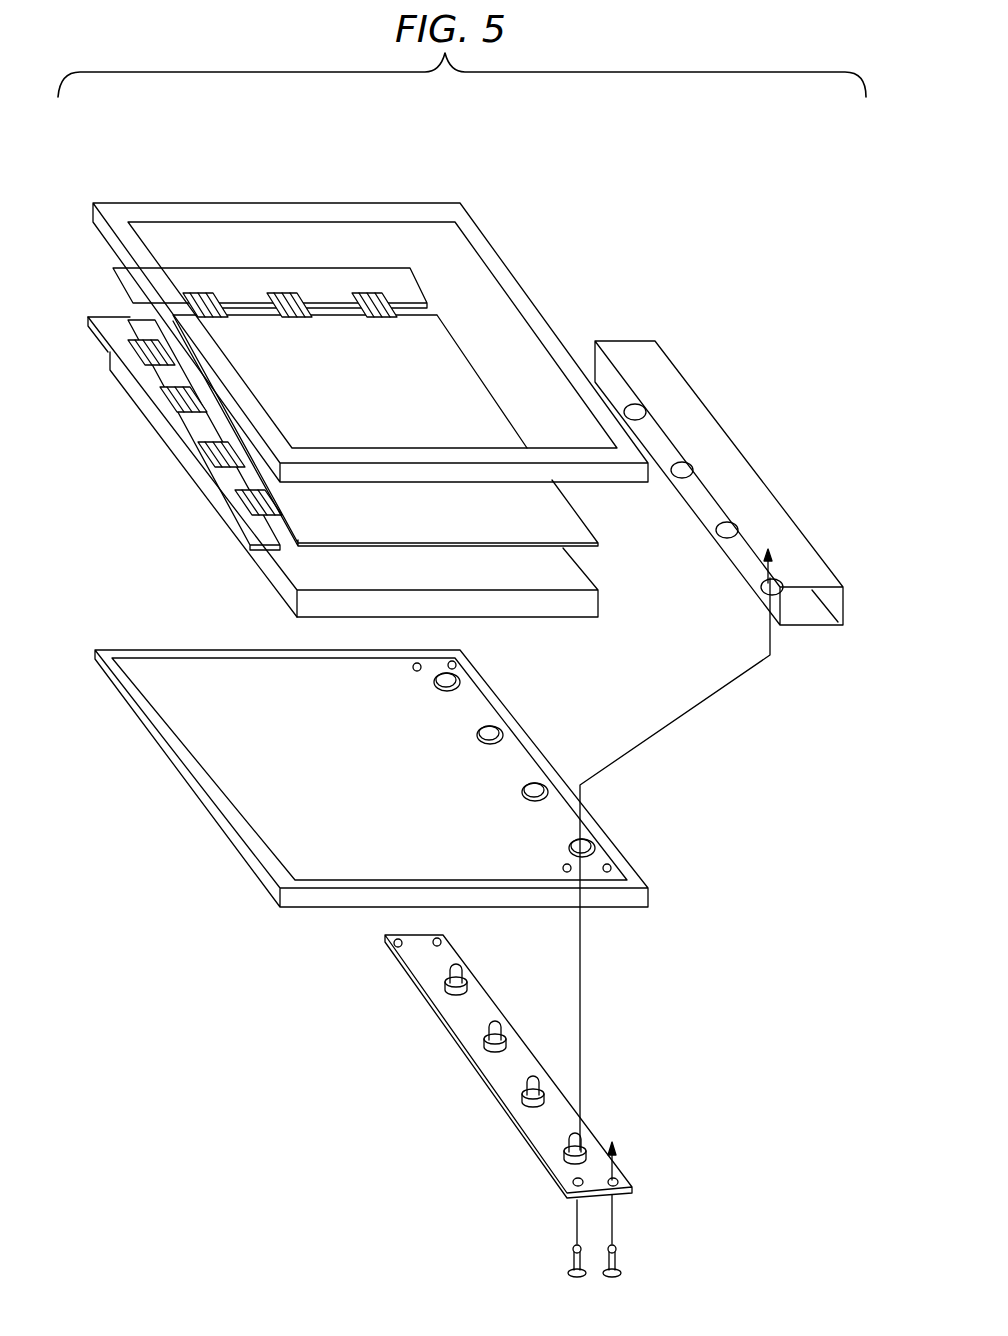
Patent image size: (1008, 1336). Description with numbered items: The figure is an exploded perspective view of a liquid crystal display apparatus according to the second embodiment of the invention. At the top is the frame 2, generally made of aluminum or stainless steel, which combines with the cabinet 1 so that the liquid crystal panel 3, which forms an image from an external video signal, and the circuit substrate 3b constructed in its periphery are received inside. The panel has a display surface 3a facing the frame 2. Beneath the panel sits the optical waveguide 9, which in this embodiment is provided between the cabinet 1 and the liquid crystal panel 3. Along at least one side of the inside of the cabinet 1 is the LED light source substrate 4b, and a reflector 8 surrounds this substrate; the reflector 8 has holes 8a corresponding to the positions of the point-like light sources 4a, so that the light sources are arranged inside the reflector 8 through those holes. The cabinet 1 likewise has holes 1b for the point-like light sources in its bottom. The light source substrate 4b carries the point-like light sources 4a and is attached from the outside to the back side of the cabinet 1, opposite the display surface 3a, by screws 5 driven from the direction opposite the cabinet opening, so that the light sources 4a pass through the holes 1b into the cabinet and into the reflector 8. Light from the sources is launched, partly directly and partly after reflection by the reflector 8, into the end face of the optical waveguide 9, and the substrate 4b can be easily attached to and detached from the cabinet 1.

The cabinet 1 is at (383, 778).
The holes for point-like light sources 1b is at (600, 848).
The frame 2 is at (461, 211).
The liquid crystal panel 3 is at (447, 372).
The display surface 3a is at (343, 374).
The circuit substrate 3b is at (210, 472).
The point-like light sources 4a is at (490, 1030).
The light source substrate 4b is at (545, 1135).
The screws 5 is at (575, 1258).
The reflector 8 is at (719, 473).
The holes 8a is at (727, 528).
The optical waveguide 9 is at (280, 587).